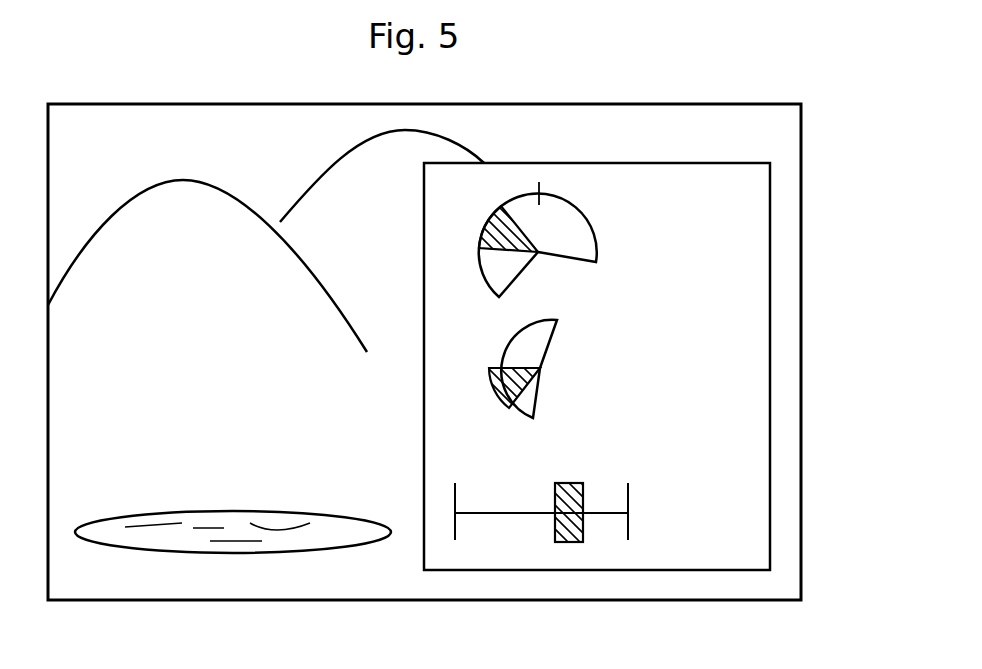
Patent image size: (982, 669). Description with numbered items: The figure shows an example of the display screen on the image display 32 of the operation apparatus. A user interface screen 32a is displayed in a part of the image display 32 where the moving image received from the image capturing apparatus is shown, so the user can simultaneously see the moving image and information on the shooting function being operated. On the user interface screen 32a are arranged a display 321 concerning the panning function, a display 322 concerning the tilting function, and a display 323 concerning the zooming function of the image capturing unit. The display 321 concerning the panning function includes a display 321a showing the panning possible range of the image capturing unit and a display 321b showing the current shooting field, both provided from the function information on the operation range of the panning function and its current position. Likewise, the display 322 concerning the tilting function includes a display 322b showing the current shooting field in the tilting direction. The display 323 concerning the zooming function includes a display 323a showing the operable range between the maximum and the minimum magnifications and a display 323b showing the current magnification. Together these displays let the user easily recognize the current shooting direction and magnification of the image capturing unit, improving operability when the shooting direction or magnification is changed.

The image display 32 is at (425, 104).
The user interface screen 32a is at (772, 222).
The display concerning the panning function 321 is at (640, 221).
The display showing the panning possible range 321a is at (573, 212).
The display showing the current shooting field 321b is at (498, 205).
The display concerning the tilting function 322 is at (610, 398).
The display showing the current shooting field 322b is at (492, 385).
The display concerning the zooming function 323 is at (605, 538).
The display showing the operable range 323a is at (455, 514).
The display showing the current magnification 323b is at (569, 546).